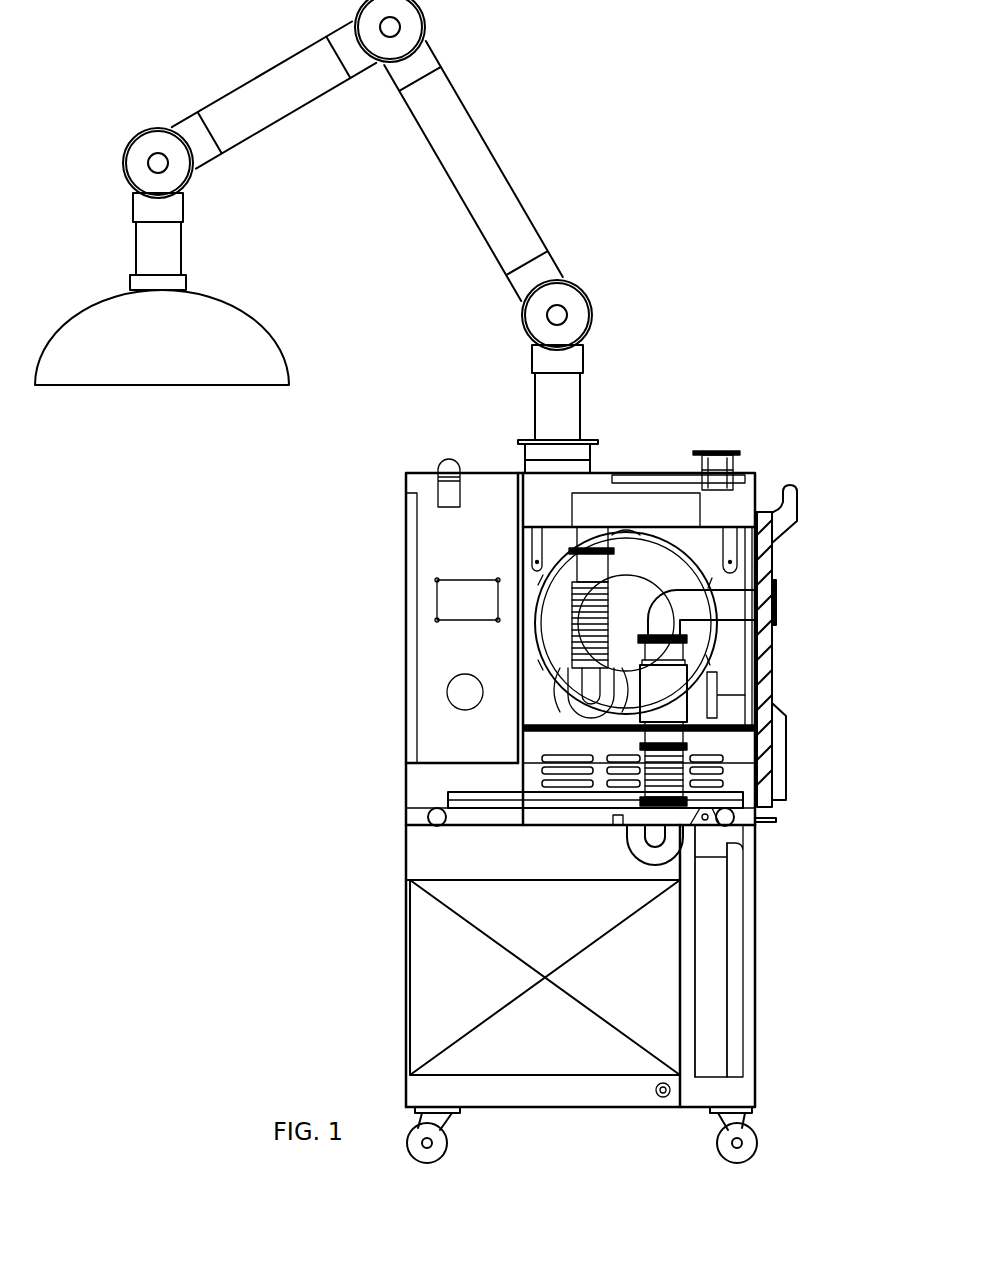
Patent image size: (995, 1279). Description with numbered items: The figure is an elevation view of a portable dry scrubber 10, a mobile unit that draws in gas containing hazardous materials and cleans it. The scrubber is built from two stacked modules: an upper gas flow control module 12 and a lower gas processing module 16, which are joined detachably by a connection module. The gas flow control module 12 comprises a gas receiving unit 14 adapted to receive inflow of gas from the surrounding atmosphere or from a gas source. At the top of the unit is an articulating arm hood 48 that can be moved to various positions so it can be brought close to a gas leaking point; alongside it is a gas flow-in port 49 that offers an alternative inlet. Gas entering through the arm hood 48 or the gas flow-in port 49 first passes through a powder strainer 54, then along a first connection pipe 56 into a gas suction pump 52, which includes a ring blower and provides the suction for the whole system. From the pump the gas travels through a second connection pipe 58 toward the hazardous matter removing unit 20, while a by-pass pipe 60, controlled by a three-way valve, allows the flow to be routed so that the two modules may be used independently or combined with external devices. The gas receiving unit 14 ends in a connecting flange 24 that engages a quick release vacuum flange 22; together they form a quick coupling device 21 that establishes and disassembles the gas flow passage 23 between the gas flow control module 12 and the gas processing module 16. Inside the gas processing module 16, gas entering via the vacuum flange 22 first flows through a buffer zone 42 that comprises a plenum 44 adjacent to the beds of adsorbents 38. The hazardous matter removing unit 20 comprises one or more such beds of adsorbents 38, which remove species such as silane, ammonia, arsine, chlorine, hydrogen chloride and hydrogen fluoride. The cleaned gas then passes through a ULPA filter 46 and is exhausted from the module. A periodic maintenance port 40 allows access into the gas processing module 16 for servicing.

The portable dry scrubber 10 is at (678, 245).
The gas flow control module 12 is at (403, 597).
The gas receiving unit 14 is at (688, 536).
The gas processing module 16 is at (410, 933).
The hazardous matter removing unit 20 is at (440, 981).
The quick coupling device 21 is at (630, 815).
The quick release vacuum flange 22 is at (710, 798).
The gas flow passage 23 is at (683, 870).
The connecting flange 24 is at (700, 796).
The beds of adsorbents 38 is at (643, 985).
The periodic maintenance port 40 is at (467, 787).
The buffer zone 42 is at (448, 836).
The plenum 44 is at (465, 868).
The ULPA filter 46 is at (728, 955).
The articulating arm hood 48 is at (252, 314).
The gas flow-in port 49 is at (730, 450).
The gas suction pump 52 is at (720, 643).
The powder strainer 54 is at (740, 503).
The first connection pipe 56 is at (570, 627).
The second connection pipe 58 is at (713, 768).
The by-pass pipe 60 is at (760, 632).